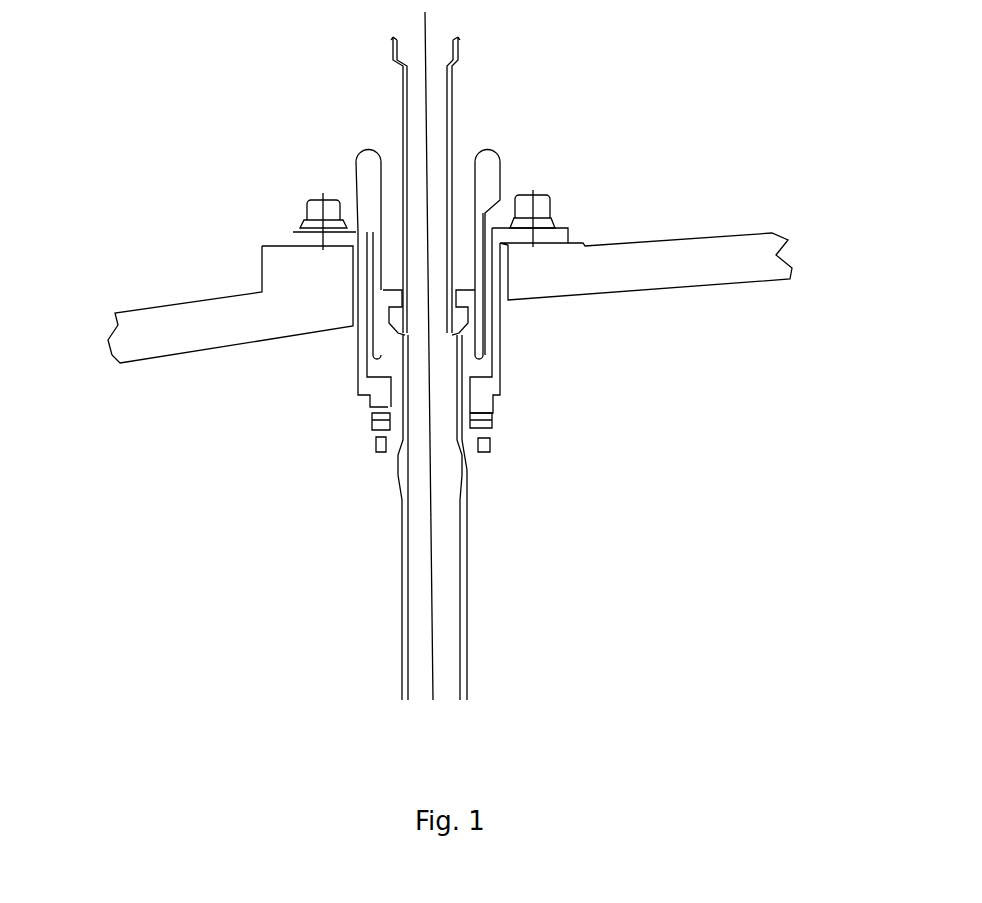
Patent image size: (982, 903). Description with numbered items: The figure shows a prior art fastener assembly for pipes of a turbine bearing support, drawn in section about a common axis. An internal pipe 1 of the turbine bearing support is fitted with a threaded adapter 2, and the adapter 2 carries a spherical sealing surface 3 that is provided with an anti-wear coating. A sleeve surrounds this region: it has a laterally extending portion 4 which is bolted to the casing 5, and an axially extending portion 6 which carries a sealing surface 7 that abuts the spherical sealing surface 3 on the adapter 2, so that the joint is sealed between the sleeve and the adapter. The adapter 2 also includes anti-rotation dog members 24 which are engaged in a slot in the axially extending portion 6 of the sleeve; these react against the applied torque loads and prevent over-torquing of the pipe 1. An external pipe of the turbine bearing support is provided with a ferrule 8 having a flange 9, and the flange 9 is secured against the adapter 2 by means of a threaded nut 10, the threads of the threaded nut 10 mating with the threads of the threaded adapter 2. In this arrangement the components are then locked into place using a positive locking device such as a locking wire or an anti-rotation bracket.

The internal pipe 1 is at (400, 447).
The threaded adapter 2 is at (463, 450).
The spherical sealing surface 3 is at (478, 405).
The laterally extending portion 4 is at (293, 240).
The casing 5 is at (638, 300).
The axially extending portion 6 is at (360, 382).
The sealing surface 7 is at (372, 408).
The ferrule 8 is at (404, 133).
The flange 9 is at (455, 323).
The threaded nut 10 is at (487, 168).
The anti-rotation dog members 24 is at (373, 439).